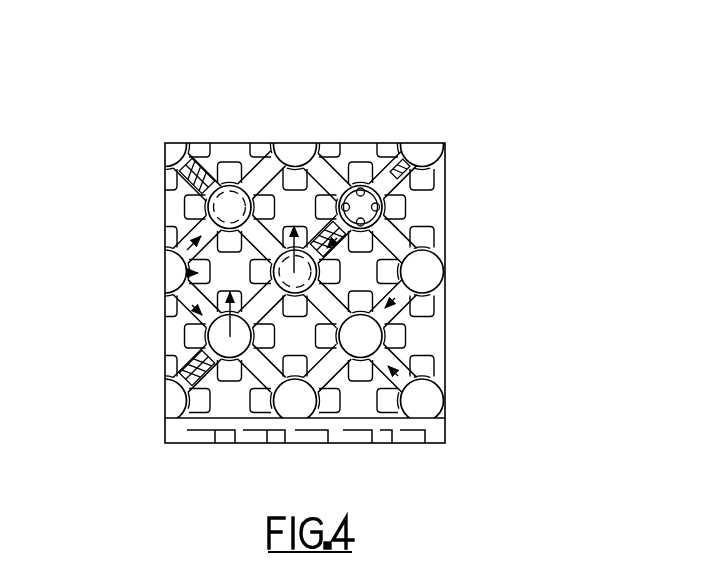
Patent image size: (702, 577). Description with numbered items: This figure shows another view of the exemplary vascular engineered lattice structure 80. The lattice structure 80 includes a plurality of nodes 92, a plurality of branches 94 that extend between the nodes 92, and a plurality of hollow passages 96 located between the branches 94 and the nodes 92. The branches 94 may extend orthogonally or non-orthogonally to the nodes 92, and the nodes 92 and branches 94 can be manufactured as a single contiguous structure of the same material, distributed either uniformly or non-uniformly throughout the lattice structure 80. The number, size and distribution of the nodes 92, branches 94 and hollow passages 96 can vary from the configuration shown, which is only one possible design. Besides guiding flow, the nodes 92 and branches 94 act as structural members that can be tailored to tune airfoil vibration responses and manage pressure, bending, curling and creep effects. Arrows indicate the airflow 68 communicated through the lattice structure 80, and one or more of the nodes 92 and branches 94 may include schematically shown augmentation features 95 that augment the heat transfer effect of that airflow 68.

The vascular engineered lattice structure 80 is at (275, 96).
The node 92 is at (171, 115).
The branch 94 is at (118, 404).
The augmentation feature 95 is at (316, 73).
The hollow passage 96 is at (224, 474).
The airflow 68 is at (532, 381).